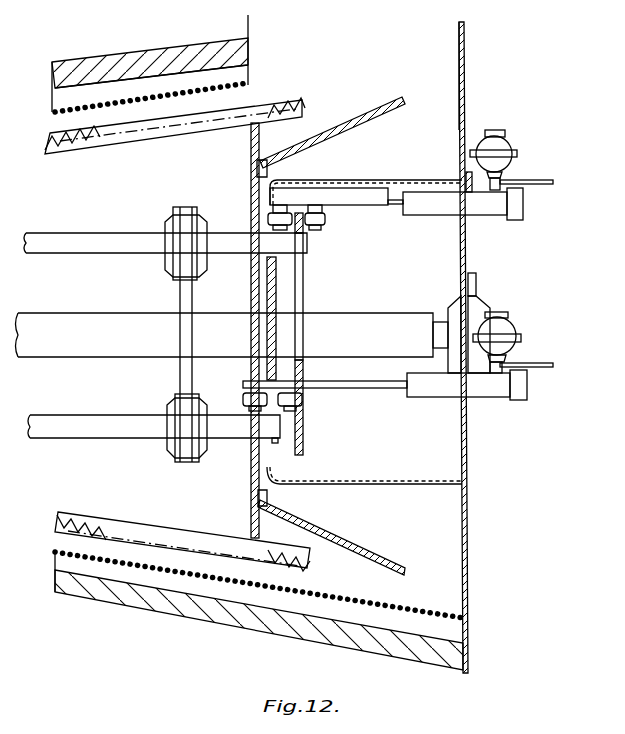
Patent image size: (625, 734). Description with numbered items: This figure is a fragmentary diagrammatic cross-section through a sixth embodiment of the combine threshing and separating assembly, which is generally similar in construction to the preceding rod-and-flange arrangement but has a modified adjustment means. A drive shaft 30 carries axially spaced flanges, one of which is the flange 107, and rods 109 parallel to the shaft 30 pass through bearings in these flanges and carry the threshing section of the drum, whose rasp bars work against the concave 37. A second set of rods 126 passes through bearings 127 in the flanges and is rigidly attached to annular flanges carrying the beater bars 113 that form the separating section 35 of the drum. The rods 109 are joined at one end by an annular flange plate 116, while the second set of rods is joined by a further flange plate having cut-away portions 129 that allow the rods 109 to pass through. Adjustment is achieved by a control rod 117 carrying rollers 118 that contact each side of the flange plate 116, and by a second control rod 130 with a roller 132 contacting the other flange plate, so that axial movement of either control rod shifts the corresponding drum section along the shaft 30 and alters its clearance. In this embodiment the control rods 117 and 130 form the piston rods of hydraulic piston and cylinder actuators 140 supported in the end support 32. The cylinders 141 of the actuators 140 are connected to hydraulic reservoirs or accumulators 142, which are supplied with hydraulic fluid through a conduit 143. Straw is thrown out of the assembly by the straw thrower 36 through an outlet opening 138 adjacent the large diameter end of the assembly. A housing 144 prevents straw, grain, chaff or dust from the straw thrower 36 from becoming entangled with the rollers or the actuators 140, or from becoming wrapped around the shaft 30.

The drive shaft 30 is at (367, 313).
The end support 32 is at (467, 568).
The separating section 35 is at (99, 116).
The straw thrower 36 is at (385, 115).
The concave 37 is at (70, 95).
The flange 107 is at (181, 365).
The rods 109 is at (63, 233).
The beater bars 113 is at (93, 143).
The annular flange plate 116 is at (305, 432).
The control rod 117 is at (389, 205).
The rollers 118 is at (268, 220).
The second set of rods 126 is at (93, 431).
The bearings 127 is at (167, 442).
The cut-away portions 129 is at (277, 305).
The control rod 130 is at (397, 392).
The roller 132 is at (245, 402).
The outlet opening 138 is at (447, 83).
The hydraulic piston and cylinder actuators 140 is at (439, 220).
The cylinders 141 is at (498, 200).
The hydraulic reservoirs or accumulators 142 is at (475, 158).
The conduit 143 is at (548, 180).
The housing 144 is at (352, 177).